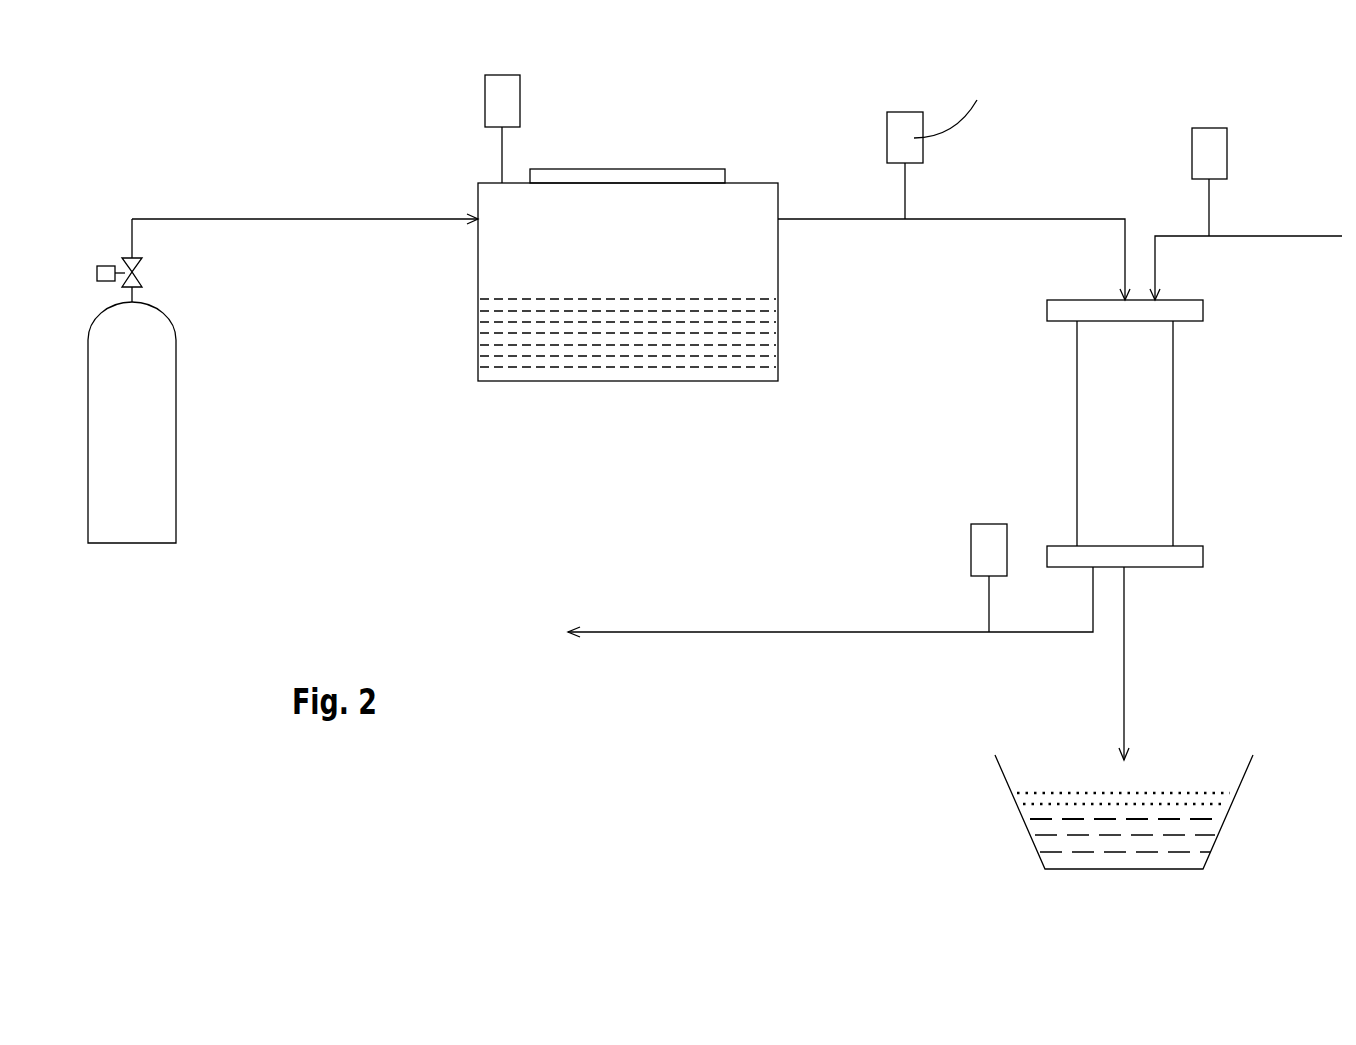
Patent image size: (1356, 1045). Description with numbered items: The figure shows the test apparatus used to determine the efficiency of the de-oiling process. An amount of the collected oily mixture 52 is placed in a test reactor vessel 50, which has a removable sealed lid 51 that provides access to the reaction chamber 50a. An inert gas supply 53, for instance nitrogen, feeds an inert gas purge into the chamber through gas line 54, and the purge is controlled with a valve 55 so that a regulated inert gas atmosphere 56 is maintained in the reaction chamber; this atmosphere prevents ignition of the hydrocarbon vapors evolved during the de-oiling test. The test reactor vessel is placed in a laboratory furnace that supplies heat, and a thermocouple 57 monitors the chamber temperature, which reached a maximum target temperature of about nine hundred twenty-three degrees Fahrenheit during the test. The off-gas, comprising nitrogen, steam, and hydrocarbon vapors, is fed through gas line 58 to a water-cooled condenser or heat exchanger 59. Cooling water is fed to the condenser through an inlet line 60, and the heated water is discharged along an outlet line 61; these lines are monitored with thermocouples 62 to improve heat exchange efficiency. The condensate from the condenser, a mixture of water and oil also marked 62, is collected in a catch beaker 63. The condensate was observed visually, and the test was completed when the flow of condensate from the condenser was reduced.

The test reactor vessel 50 is at (476, 278).
The reaction chamber 50a is at (556, 247).
The removable sealed lid 51 is at (593, 168).
The collected oily mixture 52 is at (593, 360).
The inert gas supply 53 is at (162, 495).
The gas line 54 is at (316, 218).
The valve 55 is at (107, 262).
The regulated inert gas atmosphere 56 is at (747, 215).
The thermocouple 57 is at (515, 98).
The gas line 58 is at (1025, 218).
The water-cooled condenser 59 is at (1162, 428).
The inlet line 60 is at (1265, 237).
The outlet line 61 is at (815, 633).
The thermocouples 62 is at (1197, 155).
The catch beaker 63 is at (1010, 797).